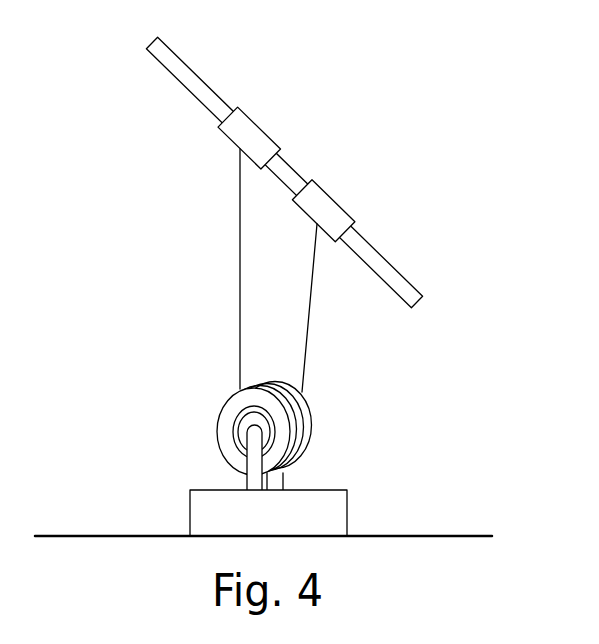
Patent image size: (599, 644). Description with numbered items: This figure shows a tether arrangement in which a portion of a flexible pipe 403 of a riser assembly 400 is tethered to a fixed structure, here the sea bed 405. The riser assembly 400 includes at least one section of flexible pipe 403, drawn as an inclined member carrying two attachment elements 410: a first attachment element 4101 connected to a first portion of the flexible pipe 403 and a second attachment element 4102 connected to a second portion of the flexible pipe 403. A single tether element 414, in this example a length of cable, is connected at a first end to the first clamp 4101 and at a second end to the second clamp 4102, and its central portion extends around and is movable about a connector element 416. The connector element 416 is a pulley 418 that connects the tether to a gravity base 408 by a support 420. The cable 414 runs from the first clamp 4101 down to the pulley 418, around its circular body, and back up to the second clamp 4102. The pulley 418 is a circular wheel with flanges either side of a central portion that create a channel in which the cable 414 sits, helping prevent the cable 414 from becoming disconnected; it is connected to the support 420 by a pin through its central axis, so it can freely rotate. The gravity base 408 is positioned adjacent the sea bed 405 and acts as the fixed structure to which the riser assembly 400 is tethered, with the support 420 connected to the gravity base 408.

The riser assembly 400 is at (428, 215).
The flexible pipe 403 is at (208, 80).
The attachment element 410 is at (292, 174).
The first attachment element 4101 is at (232, 143).
The second attachment element 4102 is at (343, 203).
The tether element 414 is at (310, 333).
The connector element 416 is at (332, 461).
The pulley 418 is at (222, 396).
The support 420 is at (245, 478).
The gravity base 408 is at (348, 507).
The sea bed 405 is at (85, 535).